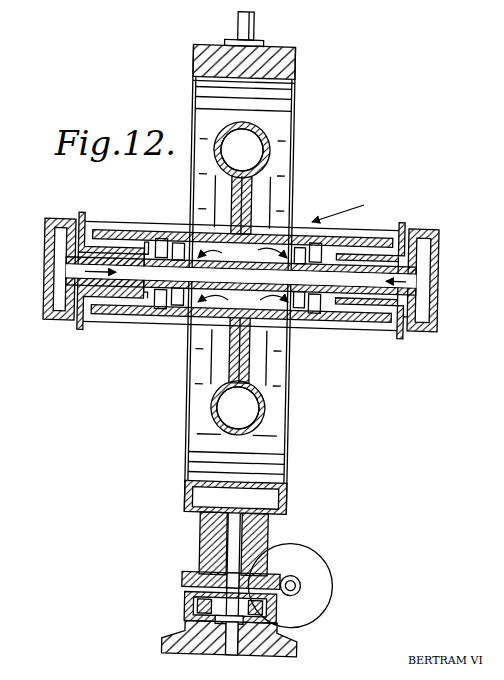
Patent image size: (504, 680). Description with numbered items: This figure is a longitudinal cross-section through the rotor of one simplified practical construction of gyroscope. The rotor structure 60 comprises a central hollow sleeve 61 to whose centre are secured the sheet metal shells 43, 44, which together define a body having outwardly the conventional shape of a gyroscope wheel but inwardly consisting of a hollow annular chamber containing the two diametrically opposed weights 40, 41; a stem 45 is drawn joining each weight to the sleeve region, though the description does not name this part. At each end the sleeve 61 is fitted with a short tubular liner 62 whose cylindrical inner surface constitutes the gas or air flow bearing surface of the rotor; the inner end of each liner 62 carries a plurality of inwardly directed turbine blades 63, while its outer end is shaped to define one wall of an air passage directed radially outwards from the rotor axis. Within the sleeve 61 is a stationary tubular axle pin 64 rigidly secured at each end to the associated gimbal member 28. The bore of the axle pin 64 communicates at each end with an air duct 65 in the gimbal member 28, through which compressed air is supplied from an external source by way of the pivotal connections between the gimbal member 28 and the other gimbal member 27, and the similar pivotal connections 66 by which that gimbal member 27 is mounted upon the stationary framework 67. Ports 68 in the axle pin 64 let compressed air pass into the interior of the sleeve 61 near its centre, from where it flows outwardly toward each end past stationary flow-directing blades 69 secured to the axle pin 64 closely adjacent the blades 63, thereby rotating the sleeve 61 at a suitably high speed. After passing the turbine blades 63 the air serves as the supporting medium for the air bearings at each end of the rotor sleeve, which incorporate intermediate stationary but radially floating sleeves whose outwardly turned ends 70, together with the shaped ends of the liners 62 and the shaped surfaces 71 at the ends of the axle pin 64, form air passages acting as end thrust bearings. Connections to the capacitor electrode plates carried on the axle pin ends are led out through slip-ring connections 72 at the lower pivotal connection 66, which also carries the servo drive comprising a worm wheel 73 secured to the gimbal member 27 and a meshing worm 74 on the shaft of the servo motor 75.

The gimbal member 27 is at (294, 66).
The gimbal member 28 is at (55, 318).
The weight 40 is at (251, 151).
The weight 41 is at (218, 408).
The sheet metal shell 43 is at (212, 132).
The sheet metal shell 44 is at (270, 152).
The valve stem 45 is at (270, 200).
The rotor structure 60 is at (344, 201).
The central hollow sleeve 61 is at (190, 222).
The tubular liner 62 is at (119, 228).
The turbine blade 63 is at (165, 228).
The axle pin 64 is at (243, 306).
The air duct 65 is at (412, 268).
The pivotal connection 66 is at (180, 581).
The stationary framework 67 is at (297, 645).
The port 68 is at (242, 253).
The flow-directing blade 69 is at (174, 313).
The outwardly turned end 70 is at (401, 222).
The shaped surface 71 is at (405, 314).
The slip-ring connection 72 is at (202, 530).
The worm wheel 73 is at (286, 560).
The worm 74 is at (307, 586).
The servo motor 75 is at (333, 568).